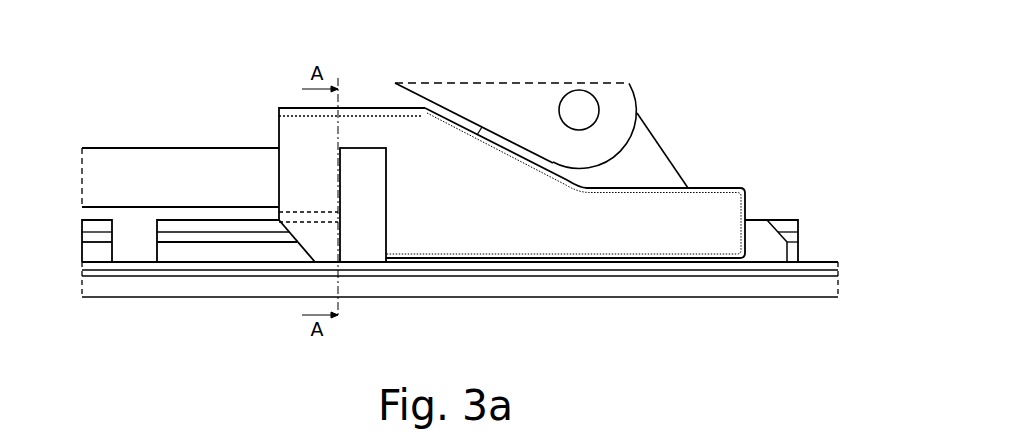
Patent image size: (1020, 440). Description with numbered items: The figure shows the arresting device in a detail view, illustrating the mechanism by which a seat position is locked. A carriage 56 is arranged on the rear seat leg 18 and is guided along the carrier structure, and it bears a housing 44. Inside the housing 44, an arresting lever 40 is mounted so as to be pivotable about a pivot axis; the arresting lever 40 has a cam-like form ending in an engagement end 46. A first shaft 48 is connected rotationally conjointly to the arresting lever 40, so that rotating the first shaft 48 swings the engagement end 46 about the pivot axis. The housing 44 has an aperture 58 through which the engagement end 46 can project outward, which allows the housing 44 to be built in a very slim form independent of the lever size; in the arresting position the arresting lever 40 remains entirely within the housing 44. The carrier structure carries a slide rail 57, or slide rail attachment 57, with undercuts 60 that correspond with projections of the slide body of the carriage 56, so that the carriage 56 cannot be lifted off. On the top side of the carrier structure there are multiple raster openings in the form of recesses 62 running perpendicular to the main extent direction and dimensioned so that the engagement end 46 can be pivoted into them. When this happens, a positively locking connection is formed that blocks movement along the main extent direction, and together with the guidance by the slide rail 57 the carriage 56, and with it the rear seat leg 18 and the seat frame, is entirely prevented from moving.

The rear seat leg 18 is at (538, 97).
The arresting lever 40 is at (375, 186).
The housing 44 is at (295, 123).
The engagement end 46 is at (396, 243).
The first shaft 48 is at (128, 163).
The carriage 56 is at (412, 142).
The slide rail 57 is at (788, 232).
The aperture 58 is at (350, 160).
The undercuts 60 is at (173, 247).
The recesses 62 is at (132, 252).